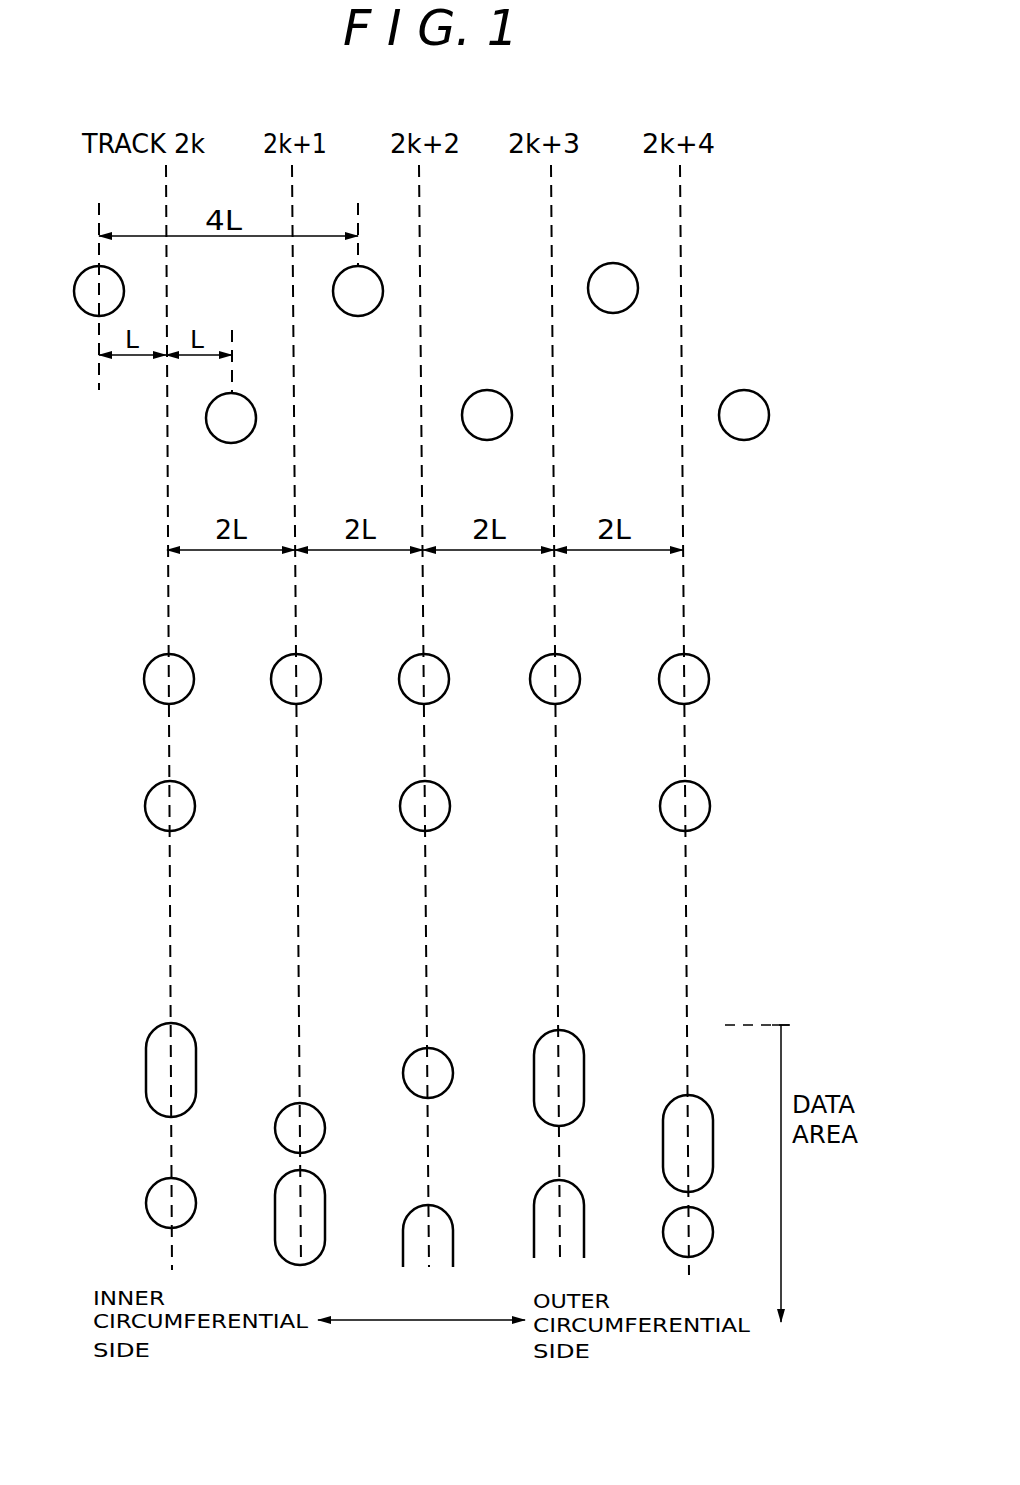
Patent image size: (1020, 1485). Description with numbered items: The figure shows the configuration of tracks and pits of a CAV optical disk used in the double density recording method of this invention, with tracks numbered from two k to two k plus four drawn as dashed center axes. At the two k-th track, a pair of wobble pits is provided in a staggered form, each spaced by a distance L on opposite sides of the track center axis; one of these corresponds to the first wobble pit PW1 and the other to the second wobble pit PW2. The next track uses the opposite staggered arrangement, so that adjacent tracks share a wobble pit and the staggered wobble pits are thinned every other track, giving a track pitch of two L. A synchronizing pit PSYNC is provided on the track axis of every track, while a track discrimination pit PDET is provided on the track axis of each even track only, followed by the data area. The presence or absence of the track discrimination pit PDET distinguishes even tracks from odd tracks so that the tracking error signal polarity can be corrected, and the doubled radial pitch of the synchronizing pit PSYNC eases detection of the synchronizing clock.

The first wobble pit PW1 is at (694, 283).
The second wobble pit PW2 is at (779, 414).
The synchronizing pit PSYNC is at (719, 680).
The track discrimination pit PDET is at (725, 804).